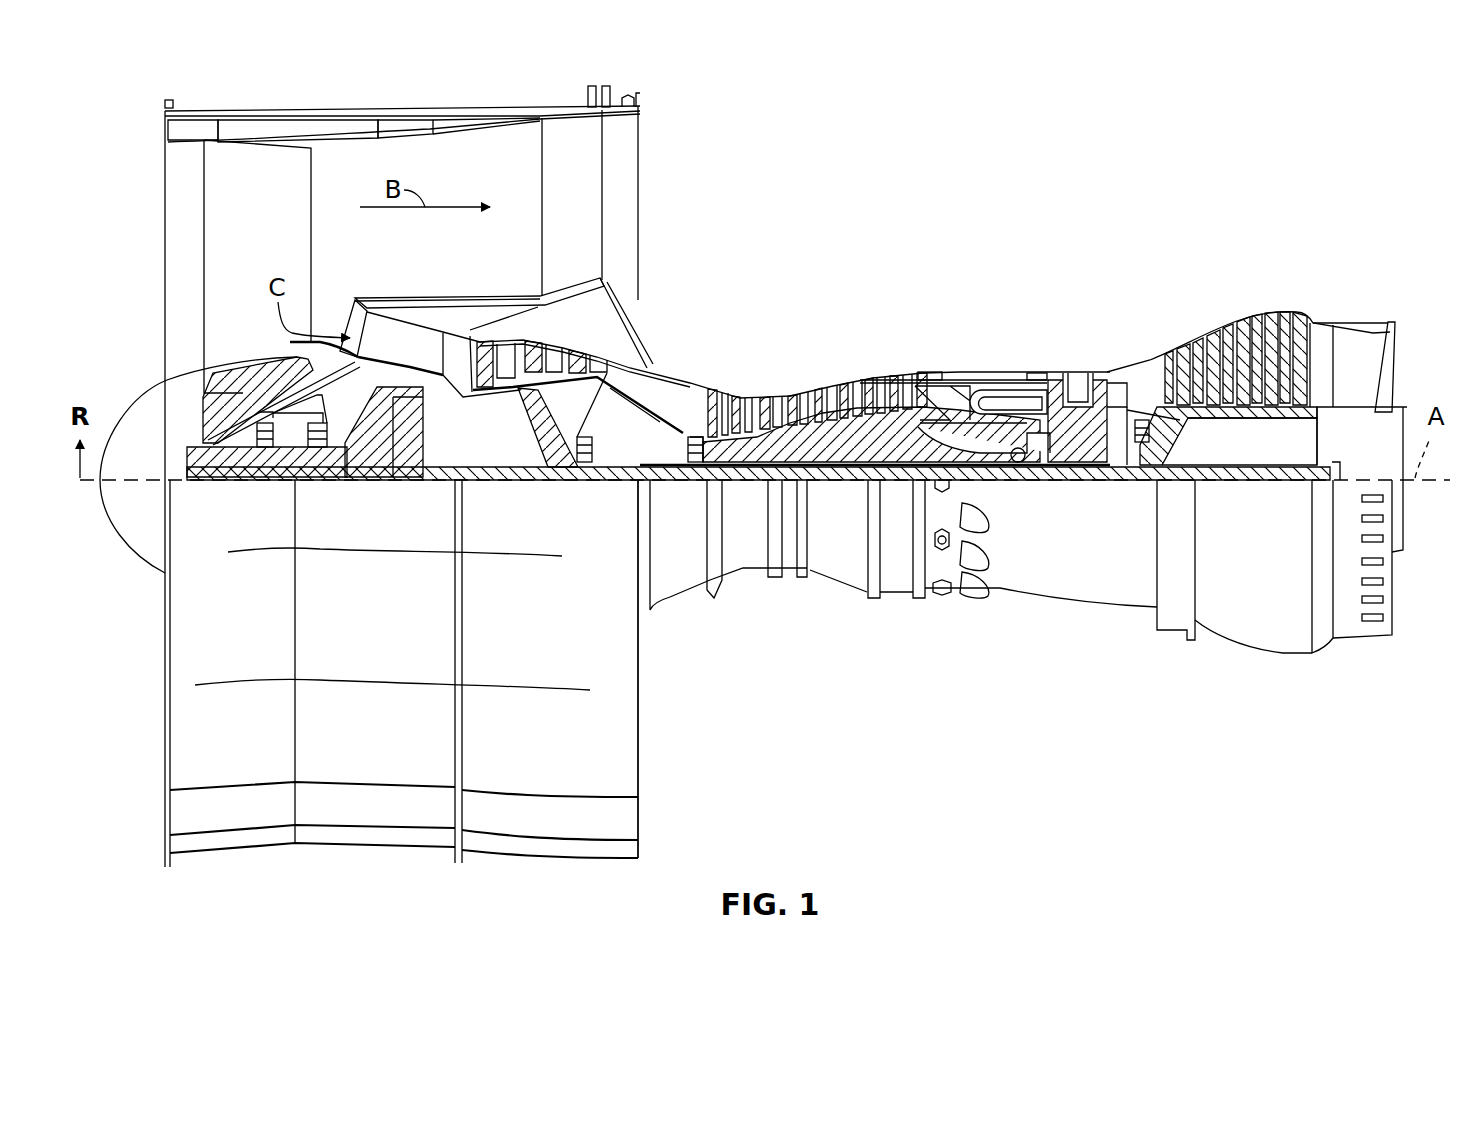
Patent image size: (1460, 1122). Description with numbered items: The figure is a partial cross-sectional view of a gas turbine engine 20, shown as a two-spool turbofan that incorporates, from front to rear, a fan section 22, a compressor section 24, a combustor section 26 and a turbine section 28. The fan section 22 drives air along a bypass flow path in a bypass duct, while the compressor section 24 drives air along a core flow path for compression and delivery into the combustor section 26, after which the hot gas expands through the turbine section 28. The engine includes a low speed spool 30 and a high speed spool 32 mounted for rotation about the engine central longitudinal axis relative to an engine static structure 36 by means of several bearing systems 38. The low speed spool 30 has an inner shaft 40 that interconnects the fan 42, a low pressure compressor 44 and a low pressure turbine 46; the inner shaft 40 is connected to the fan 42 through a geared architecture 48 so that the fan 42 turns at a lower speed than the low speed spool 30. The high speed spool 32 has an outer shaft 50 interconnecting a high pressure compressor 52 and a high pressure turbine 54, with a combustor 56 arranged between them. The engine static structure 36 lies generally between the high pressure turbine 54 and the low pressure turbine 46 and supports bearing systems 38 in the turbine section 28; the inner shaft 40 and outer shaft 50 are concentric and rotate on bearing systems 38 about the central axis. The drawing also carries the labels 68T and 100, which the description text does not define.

The gas turbine engine 20 is at (1212, 146).
The fan section 22 is at (283, 106).
The compressor section 24 is at (828, 336).
The combustor section 26 is at (996, 332).
The turbine section 28 is at (1140, 320).
The low speed spool 30 is at (860, 485).
The high speed spool 32 is at (930, 390).
The engine static structure 36 is at (900, 598).
The bearing systems 38 is at (270, 442).
The inner shaft 40 is at (653, 472).
The fan 42 is at (281, 266).
The low pressure compressor 44 is at (556, 358).
The low pressure turbine 46 is at (1246, 336).
The geared architecture 48 is at (407, 445).
The outer shaft 50 is at (1020, 462).
The high pressure compressor 52 is at (820, 447).
The high pressure turbine 54 is at (1068, 373).
The combustor 56 is at (1002, 395).
The turbine blade 68T is at (1047, 367).
The airfoil 100 is at (216, 252).